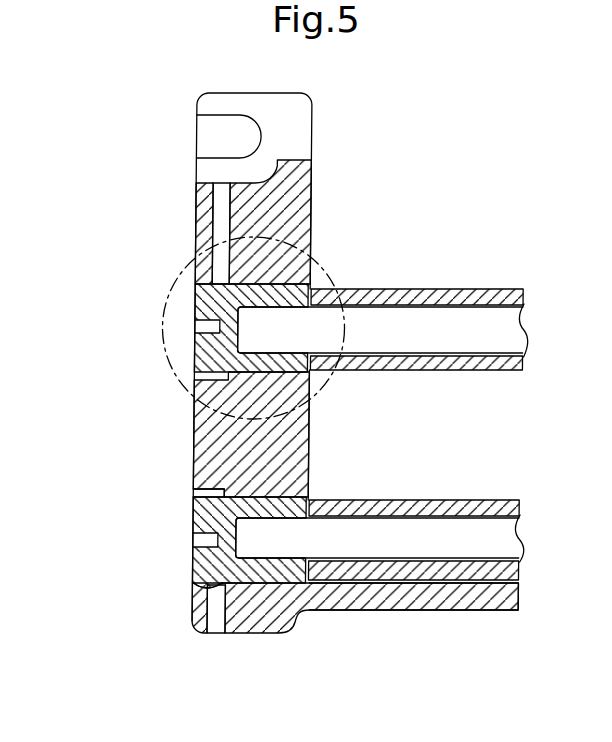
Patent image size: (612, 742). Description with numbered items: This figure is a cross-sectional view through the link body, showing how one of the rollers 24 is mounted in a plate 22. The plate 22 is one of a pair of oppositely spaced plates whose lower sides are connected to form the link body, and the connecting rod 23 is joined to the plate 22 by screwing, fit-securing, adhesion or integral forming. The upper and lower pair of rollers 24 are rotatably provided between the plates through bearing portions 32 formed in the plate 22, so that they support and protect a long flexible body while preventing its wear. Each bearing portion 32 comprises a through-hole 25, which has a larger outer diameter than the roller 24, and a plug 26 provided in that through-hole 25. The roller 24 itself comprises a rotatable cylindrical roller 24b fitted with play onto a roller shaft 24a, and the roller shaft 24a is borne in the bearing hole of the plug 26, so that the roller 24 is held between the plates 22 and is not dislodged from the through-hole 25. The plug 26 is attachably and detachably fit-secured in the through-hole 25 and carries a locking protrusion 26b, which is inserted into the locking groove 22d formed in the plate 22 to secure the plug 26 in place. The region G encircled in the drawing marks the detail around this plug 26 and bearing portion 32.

The plate 22 is at (296, 188).
The locking groove 22d is at (222, 208).
The connecting rod 23 is at (377, 598).
The roller 24 is at (400, 452).
The roller shaft 24a is at (400, 315).
The cylindrical roller 24b is at (418, 363).
The through-hole 25 is at (228, 495).
The plug 26 is at (205, 302).
The locking protrusion 26b is at (205, 583).
The bearing portion 32 is at (124, 562).
The seal region (detail) G is at (152, 362).